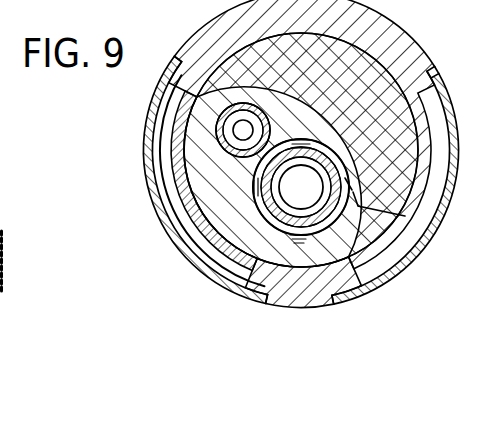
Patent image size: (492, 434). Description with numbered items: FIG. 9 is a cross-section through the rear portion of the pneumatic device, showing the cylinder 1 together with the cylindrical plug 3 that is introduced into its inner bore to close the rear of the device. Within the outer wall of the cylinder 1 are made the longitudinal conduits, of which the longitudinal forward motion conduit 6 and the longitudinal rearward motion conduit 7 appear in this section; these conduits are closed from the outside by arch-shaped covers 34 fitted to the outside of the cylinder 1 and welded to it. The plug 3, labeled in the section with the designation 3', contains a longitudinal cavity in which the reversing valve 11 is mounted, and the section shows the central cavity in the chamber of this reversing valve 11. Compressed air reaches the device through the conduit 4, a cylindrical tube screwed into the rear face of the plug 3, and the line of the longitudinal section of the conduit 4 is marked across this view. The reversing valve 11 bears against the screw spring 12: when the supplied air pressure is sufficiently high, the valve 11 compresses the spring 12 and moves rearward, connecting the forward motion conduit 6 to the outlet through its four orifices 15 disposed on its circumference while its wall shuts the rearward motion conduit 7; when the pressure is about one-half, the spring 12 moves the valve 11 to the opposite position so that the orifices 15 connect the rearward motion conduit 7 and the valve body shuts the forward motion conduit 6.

The cylinder 1 is at (398, 43).
The cylindrical plug 3 is at (301, 150).
The rotor 3' is at (104, 7).
The conduit 4 is at (300, 232).
The longitudinal forward motion conduit 6 is at (440, 184).
The longitudinal rearward motion conduit 7 is at (172, 202).
The reversing valve 11 is at (336, 152).
The screw spring 12 is at (352, 165).
The orifices 15 is at (310, 152).
The arch-shaped covers 34 is at (190, 256).